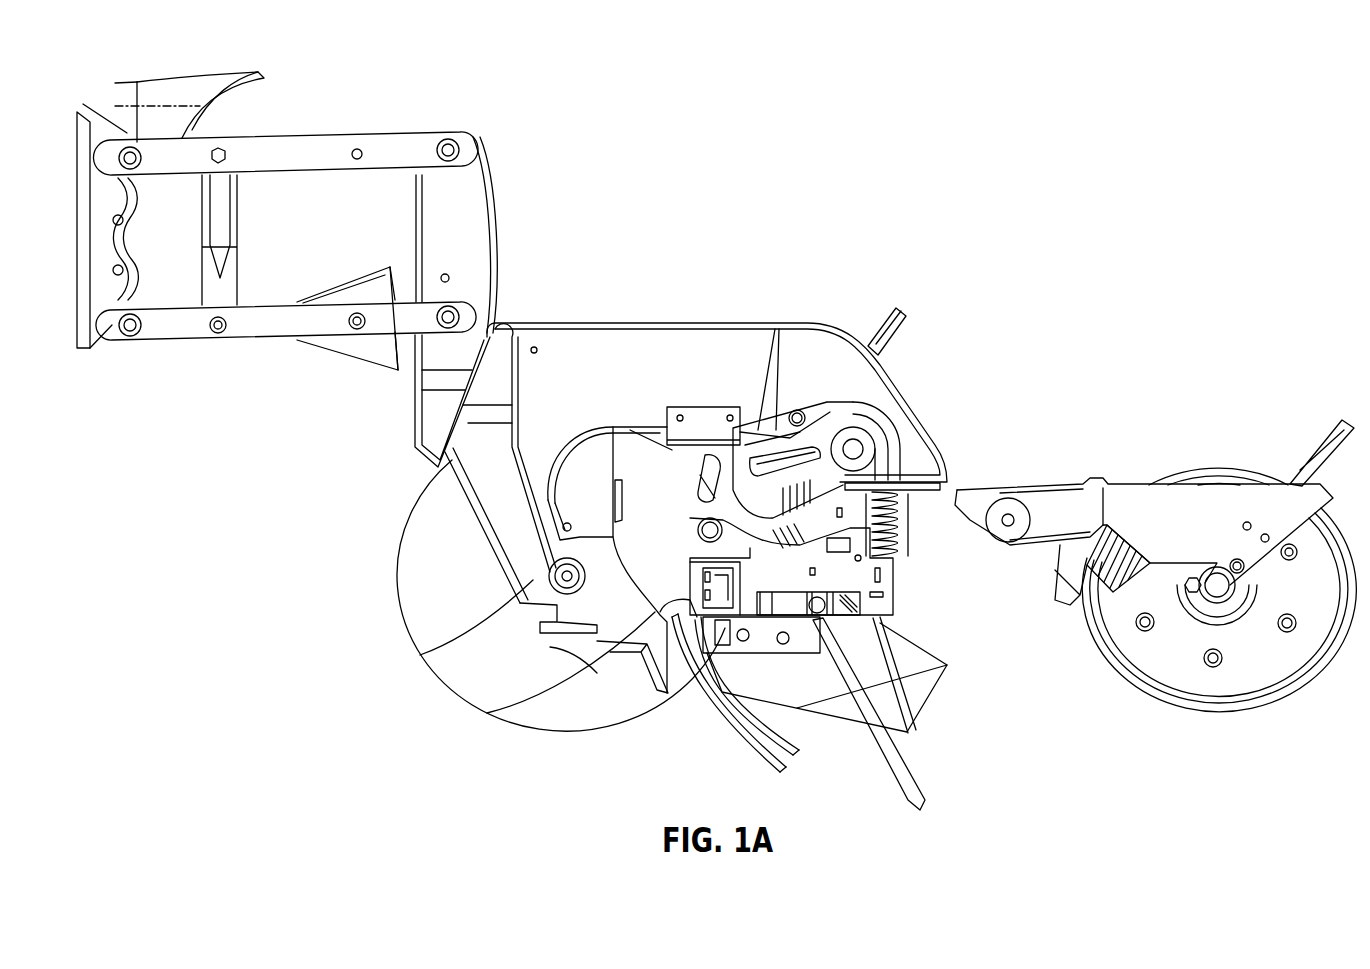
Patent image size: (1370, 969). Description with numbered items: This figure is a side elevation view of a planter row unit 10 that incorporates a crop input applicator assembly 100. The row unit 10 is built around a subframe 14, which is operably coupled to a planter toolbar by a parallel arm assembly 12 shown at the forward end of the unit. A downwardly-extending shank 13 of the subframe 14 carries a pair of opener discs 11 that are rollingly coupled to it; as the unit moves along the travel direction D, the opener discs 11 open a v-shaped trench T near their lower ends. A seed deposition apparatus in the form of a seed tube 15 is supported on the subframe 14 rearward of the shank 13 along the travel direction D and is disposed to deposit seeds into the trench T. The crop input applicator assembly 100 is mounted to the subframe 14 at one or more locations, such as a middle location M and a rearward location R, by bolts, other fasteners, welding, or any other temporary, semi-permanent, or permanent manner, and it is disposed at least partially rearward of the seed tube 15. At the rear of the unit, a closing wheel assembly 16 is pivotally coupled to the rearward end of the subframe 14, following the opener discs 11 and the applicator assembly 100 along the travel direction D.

The row unit 10 is at (1146, 113).
The opener discs 11 is at (408, 573).
The parallel arm assembly 12 is at (372, 132).
The shank 13 is at (420, 655).
The subframe 14 is at (670, 322).
The seed tube 15 is at (487, 713).
The closing wheel assembly 16 is at (1147, 495).
The crop input applicator assembly 100 is at (942, 703).
The middle location M is at (714, 356).
The rearward location R is at (914, 458).
The trench T is at (592, 708).
The travel direction D is at (1125, 253).